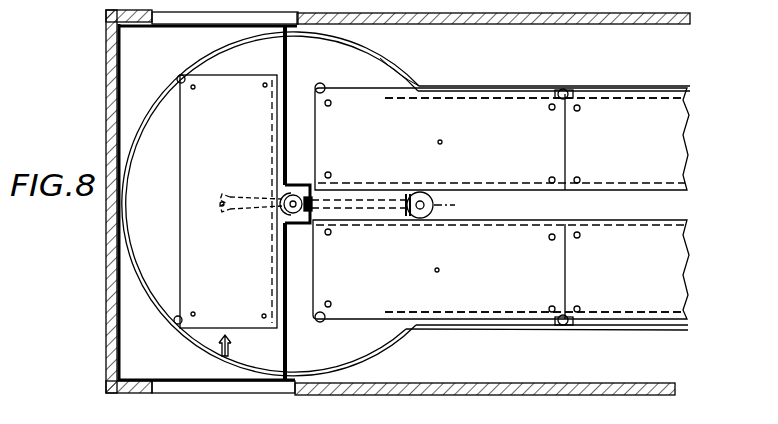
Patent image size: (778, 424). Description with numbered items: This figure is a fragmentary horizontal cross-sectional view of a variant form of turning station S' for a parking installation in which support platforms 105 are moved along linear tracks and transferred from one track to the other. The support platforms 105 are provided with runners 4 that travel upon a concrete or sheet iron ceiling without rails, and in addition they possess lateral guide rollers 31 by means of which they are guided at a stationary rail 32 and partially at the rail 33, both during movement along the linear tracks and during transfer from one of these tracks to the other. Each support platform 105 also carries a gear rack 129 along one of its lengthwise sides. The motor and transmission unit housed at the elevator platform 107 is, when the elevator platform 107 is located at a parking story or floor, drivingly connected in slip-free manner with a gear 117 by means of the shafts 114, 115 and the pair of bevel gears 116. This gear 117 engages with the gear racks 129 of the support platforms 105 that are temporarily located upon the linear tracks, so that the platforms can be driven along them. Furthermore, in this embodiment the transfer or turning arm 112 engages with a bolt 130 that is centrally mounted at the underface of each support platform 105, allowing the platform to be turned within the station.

The turning station S' is at (368, 204).
The runners 4 is at (262, 316).
The lateral guide rollers 31 is at (180, 82).
The stationary rail 32 is at (385, 60).
The rail 33 is at (505, 98).
The support platforms 105 is at (190, 185).
The elevator platform 107 is at (138, 235).
The turning arm 112 is at (245, 195).
The shaft 114 is at (299, 193).
The shaft 115 is at (364, 200).
The pair of bevel gears 116 is at (417, 192).
The gear 117 is at (459, 205).
The gear rack 129 is at (522, 183).
The bolt 130 is at (222, 210).